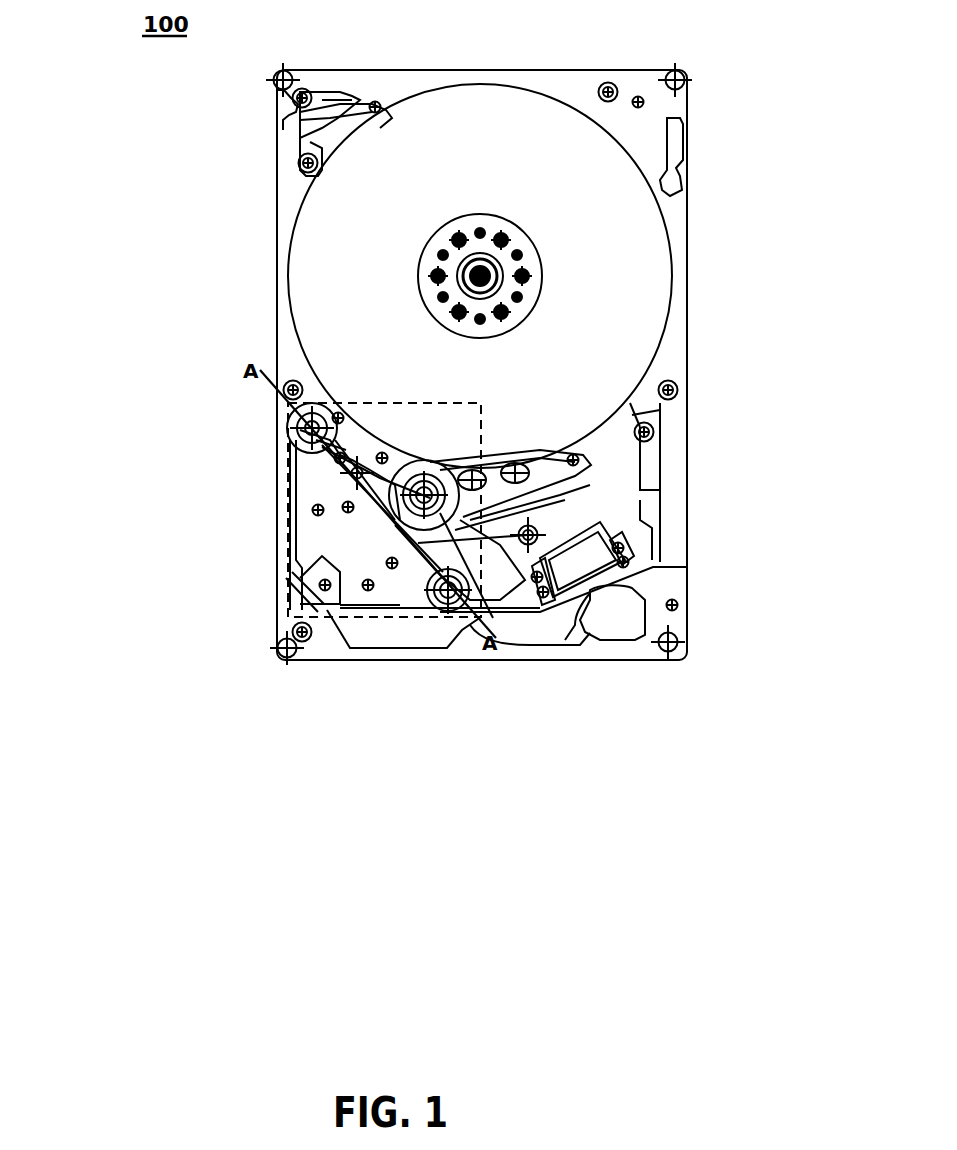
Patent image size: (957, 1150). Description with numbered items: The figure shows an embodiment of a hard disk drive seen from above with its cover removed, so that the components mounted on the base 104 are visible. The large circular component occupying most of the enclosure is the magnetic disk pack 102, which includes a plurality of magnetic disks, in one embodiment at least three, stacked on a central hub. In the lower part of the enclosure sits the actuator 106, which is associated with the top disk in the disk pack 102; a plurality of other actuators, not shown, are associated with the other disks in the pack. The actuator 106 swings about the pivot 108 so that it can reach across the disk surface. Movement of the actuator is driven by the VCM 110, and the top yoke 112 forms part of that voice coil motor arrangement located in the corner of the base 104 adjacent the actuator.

The magnetic disk pack 102 is at (620, 222).
The base 104 is at (669, 369).
The actuator 106 is at (689, 561).
The pivot 108 is at (689, 631).
The VCM 110 is at (258, 552).
The top yoke 112 is at (350, 492).